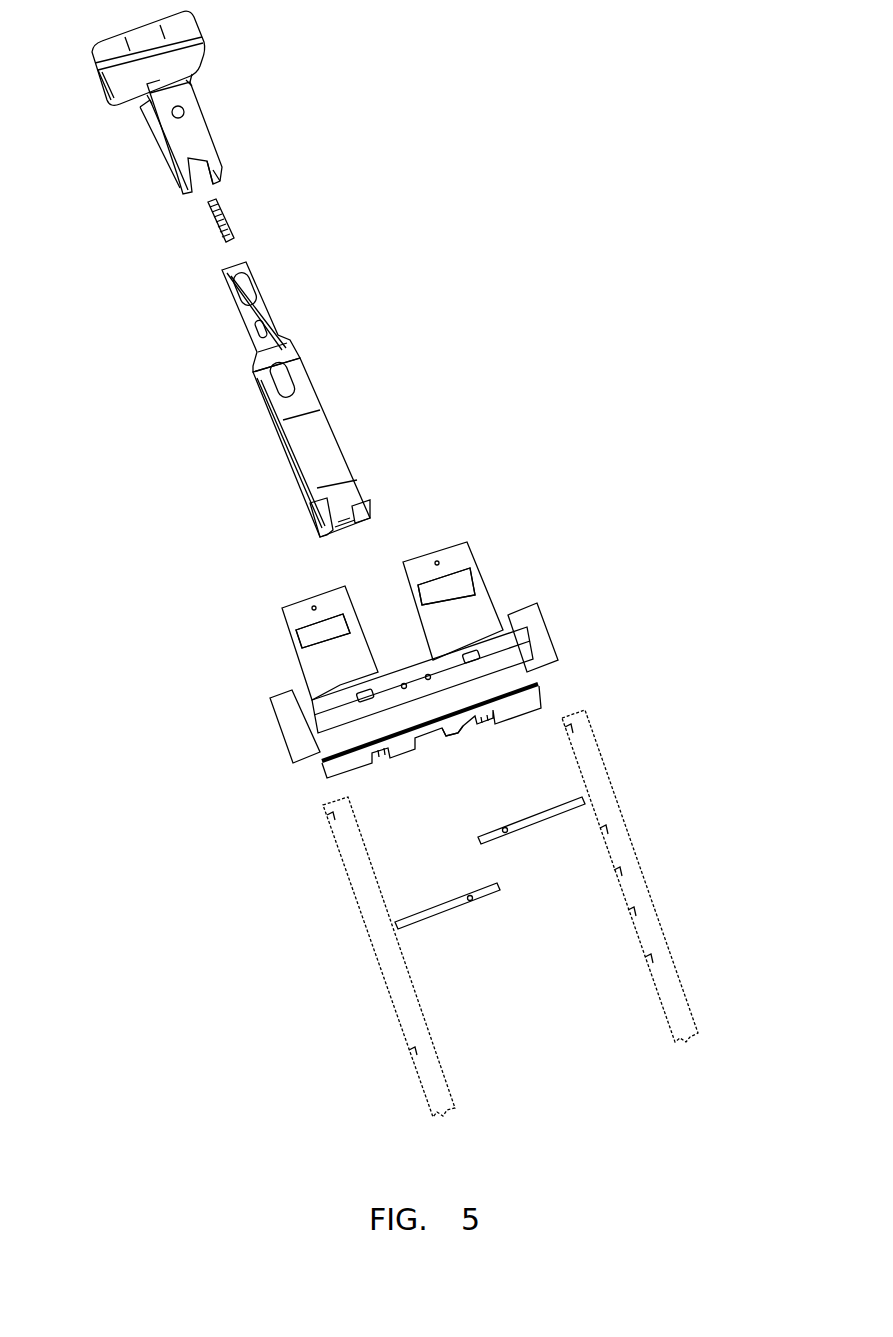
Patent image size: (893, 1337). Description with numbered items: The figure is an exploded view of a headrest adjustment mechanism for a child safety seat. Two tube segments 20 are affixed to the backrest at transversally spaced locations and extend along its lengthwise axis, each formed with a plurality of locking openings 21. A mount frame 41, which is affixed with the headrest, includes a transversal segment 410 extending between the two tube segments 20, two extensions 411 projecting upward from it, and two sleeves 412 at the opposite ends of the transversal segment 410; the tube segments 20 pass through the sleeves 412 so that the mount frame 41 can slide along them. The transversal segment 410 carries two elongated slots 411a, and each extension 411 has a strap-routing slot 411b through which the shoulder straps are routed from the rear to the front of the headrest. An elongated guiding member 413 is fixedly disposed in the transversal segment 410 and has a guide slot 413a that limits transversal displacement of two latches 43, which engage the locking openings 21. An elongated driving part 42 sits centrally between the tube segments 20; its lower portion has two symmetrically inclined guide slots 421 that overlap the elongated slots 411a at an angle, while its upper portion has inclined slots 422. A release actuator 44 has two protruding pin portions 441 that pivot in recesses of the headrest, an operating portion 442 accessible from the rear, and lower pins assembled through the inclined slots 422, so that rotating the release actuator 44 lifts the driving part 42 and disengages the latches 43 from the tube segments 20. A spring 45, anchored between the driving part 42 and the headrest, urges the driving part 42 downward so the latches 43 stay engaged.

The tube segment 20 is at (390, 960).
The locking opening 21 is at (601, 832).
The mount frame 41 is at (347, 628).
The transversal segment 410 is at (328, 709).
The extension 411 is at (328, 678).
The elongated slot 411a is at (405, 687).
The strap-routing slot 411b is at (327, 631).
The sleeve 412 is at (297, 733).
The guiding member 413 is at (340, 773).
The guide slot 413a is at (446, 735).
The driving part 42 is at (300, 399).
The guide slot 421 is at (311, 517).
The inclined slot 422 is at (253, 357).
The latch 43 is at (440, 903).
The release actuator 44 is at (192, 141).
The protruding pin portion 441 is at (197, 90).
The operating portion 442 is at (133, 69).
The spring 45 is at (228, 217).